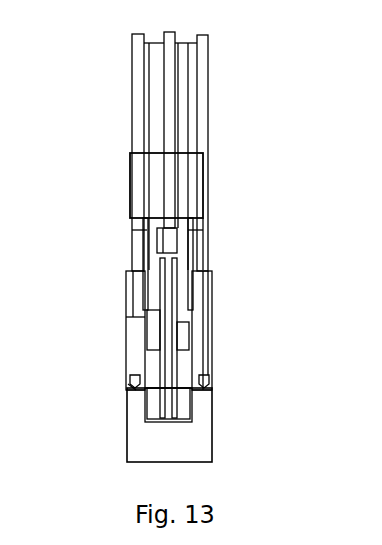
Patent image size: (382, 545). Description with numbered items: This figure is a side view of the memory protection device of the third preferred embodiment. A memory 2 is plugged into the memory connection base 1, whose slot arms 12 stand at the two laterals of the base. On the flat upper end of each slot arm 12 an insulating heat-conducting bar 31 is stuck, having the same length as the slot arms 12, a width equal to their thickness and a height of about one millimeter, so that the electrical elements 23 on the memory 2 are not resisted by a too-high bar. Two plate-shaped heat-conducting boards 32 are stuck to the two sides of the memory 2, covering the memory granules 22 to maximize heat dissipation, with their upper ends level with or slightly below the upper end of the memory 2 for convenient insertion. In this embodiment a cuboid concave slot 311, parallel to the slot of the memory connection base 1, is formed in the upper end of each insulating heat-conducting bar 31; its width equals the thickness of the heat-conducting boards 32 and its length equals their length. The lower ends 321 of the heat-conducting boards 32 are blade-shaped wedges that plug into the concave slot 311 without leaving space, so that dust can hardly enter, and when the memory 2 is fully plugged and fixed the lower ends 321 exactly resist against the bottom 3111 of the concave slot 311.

The memory connection base 1 is at (202, 433).
The slot arm 12 is at (200, 400).
The memory 2 is at (167, 138).
The memory granule 22 is at (179, 85).
The electrical element 23 is at (183, 333).
The insulating heat-conducting bar 31 is at (200, 372).
The concave slot 311 is at (128, 388).
The bottom of the concave slot 3111 is at (129, 387).
The heat-conducting board 32 is at (204, 47).
The lower end of the heat-conducting board 321 is at (137, 378).